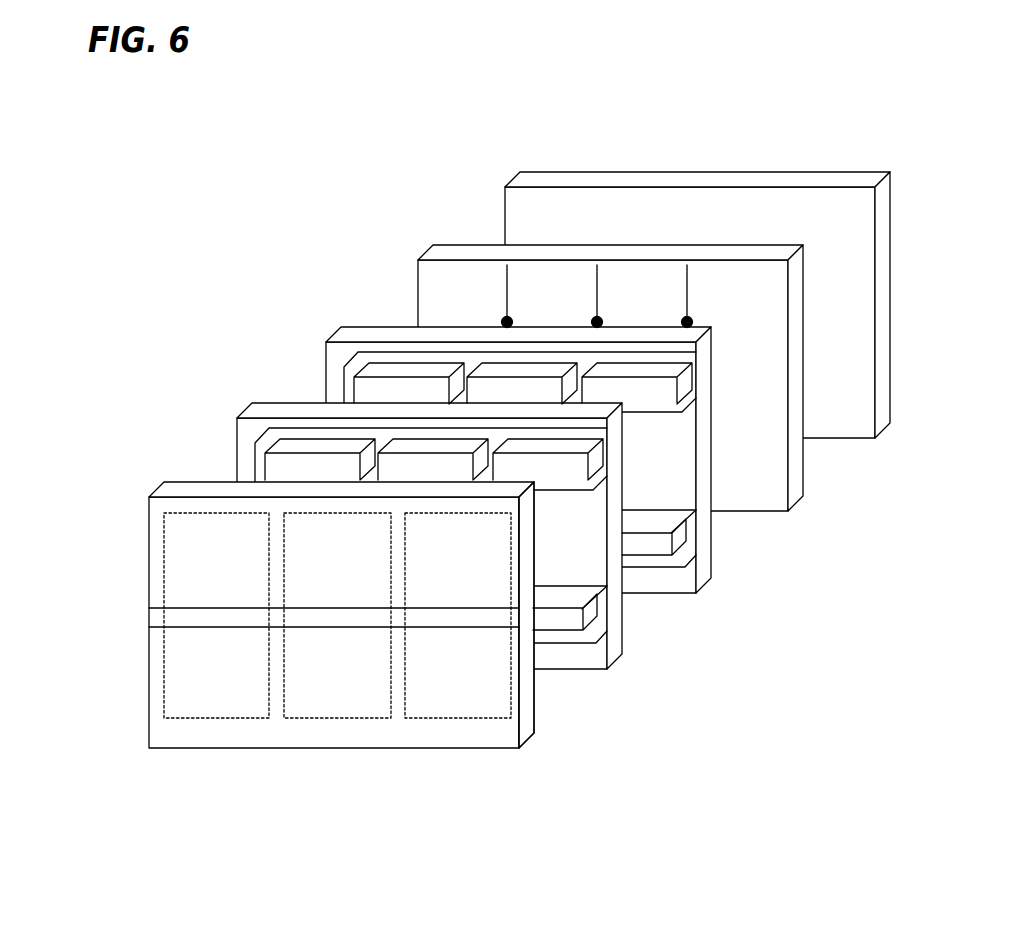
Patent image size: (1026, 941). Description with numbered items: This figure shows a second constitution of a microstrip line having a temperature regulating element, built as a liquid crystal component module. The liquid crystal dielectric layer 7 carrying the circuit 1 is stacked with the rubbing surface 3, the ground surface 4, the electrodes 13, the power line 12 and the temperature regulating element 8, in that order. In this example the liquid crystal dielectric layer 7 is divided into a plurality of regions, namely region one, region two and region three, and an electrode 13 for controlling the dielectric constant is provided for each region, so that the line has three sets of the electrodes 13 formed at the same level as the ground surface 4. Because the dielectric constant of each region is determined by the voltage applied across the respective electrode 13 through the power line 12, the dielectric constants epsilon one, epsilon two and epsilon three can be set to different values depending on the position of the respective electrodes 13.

The circuit 1 is at (153, 620).
The rubbing surface 3 is at (235, 428).
The ground surface 4 is at (330, 338).
The liquid crystal dielectric layer 7 is at (533, 715).
The temperature regulating element 8 is at (627, 170).
The power line 12 is at (687, 282).
The electrode 13 is at (413, 392).